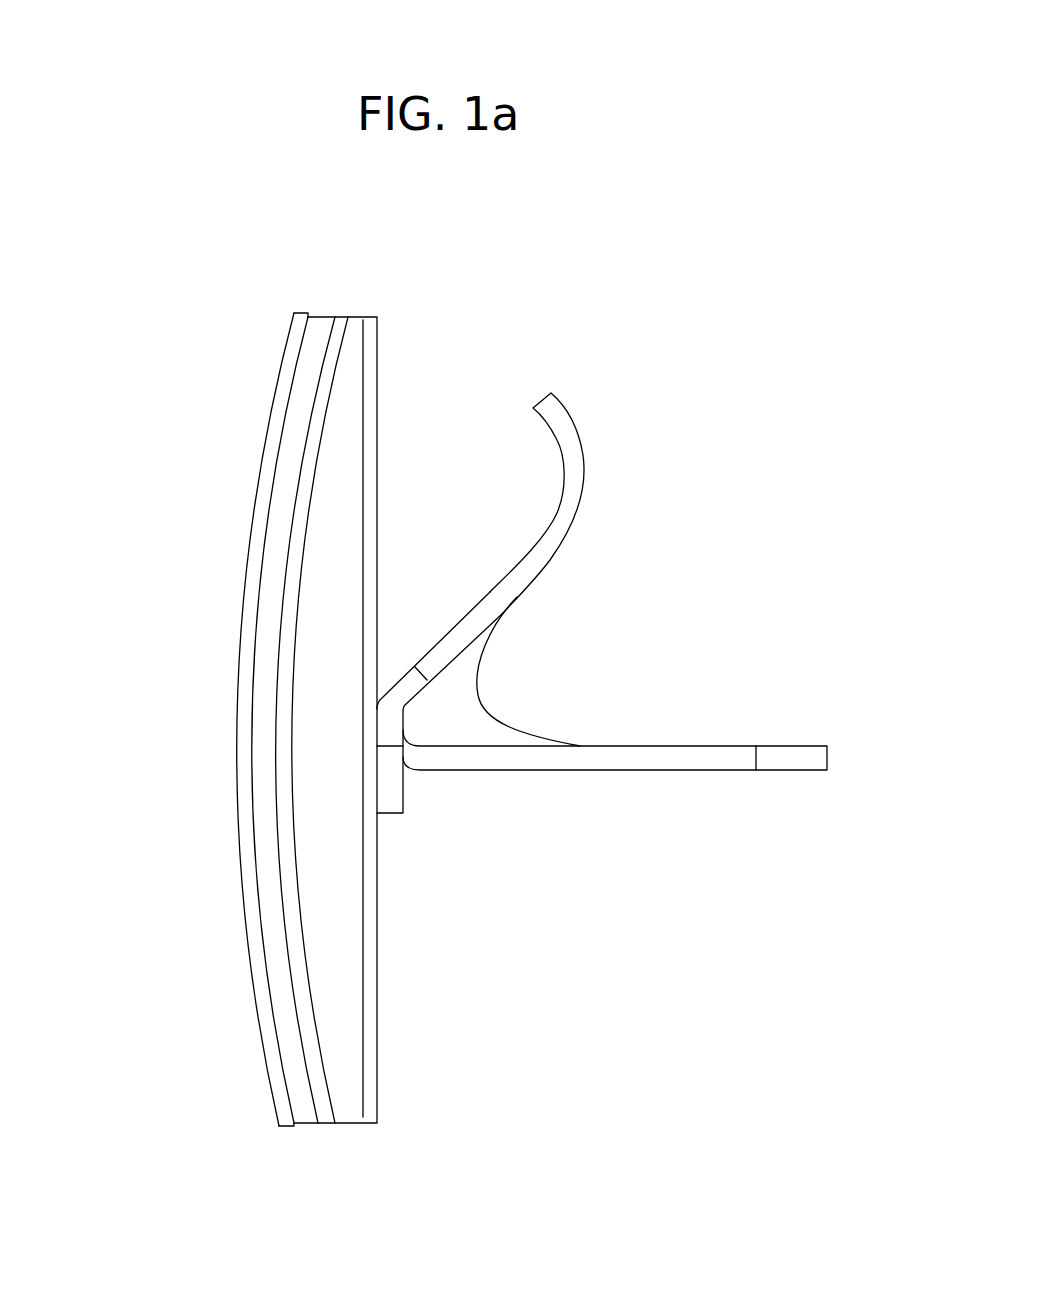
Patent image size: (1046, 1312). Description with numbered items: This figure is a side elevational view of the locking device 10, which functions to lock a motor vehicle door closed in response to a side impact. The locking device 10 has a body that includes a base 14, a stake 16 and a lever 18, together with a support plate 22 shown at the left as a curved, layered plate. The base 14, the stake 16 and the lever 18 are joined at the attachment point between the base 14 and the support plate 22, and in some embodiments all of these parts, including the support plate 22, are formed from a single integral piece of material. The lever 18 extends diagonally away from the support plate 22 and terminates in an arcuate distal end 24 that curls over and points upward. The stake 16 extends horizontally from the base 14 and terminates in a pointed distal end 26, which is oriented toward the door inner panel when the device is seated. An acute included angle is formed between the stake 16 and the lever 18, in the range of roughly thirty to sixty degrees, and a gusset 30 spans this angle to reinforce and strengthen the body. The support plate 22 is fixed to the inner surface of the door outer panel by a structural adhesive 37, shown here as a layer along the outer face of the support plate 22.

The locking device 10 is at (150, 385).
The base 14 is at (398, 790).
The stake 16 is at (672, 750).
The lever 18 is at (490, 595).
The support plate 22 is at (285, 1032).
The arcuate distal end 24 is at (583, 477).
The pointed distal end 26 is at (812, 763).
The gusset 30 is at (472, 710).
The structural adhesive 37 is at (255, 968).